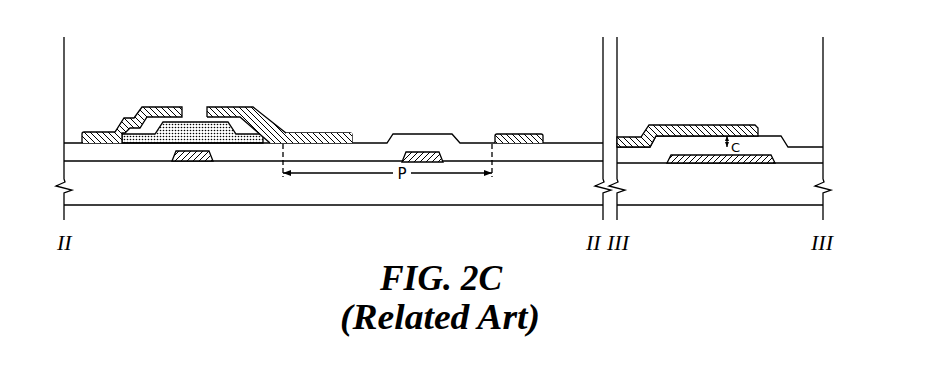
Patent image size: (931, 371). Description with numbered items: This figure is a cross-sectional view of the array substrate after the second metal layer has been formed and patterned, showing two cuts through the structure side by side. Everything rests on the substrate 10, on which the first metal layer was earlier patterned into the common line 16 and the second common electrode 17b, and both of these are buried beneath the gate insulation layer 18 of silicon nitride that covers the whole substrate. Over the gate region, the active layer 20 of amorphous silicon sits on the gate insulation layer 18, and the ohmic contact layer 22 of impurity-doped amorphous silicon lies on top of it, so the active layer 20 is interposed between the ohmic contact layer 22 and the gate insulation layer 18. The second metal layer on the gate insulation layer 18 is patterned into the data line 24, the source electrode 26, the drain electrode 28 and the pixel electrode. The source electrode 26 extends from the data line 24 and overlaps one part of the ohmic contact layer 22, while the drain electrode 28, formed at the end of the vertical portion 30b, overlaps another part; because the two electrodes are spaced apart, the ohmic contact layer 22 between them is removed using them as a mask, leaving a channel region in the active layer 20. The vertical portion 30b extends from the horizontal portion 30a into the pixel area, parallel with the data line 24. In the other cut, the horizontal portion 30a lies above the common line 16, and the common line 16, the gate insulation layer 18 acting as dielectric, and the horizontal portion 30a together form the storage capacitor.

The substrate 10 is at (290, 200).
The common line 16 is at (767, 147).
The second common electrode 17b is at (413, 152).
The gate insulation layer 18 is at (450, 133).
The active layer 20 is at (197, 121).
The ohmic contact layer 22 is at (146, 108).
The data line 24 is at (98, 131).
The source electrode 26 is at (173, 106).
The drain electrode 28 is at (223, 106).
The horizontal portion of the pixel electrode 30a is at (675, 124).
The vertical portion of the pixel electrode 30b is at (312, 132).